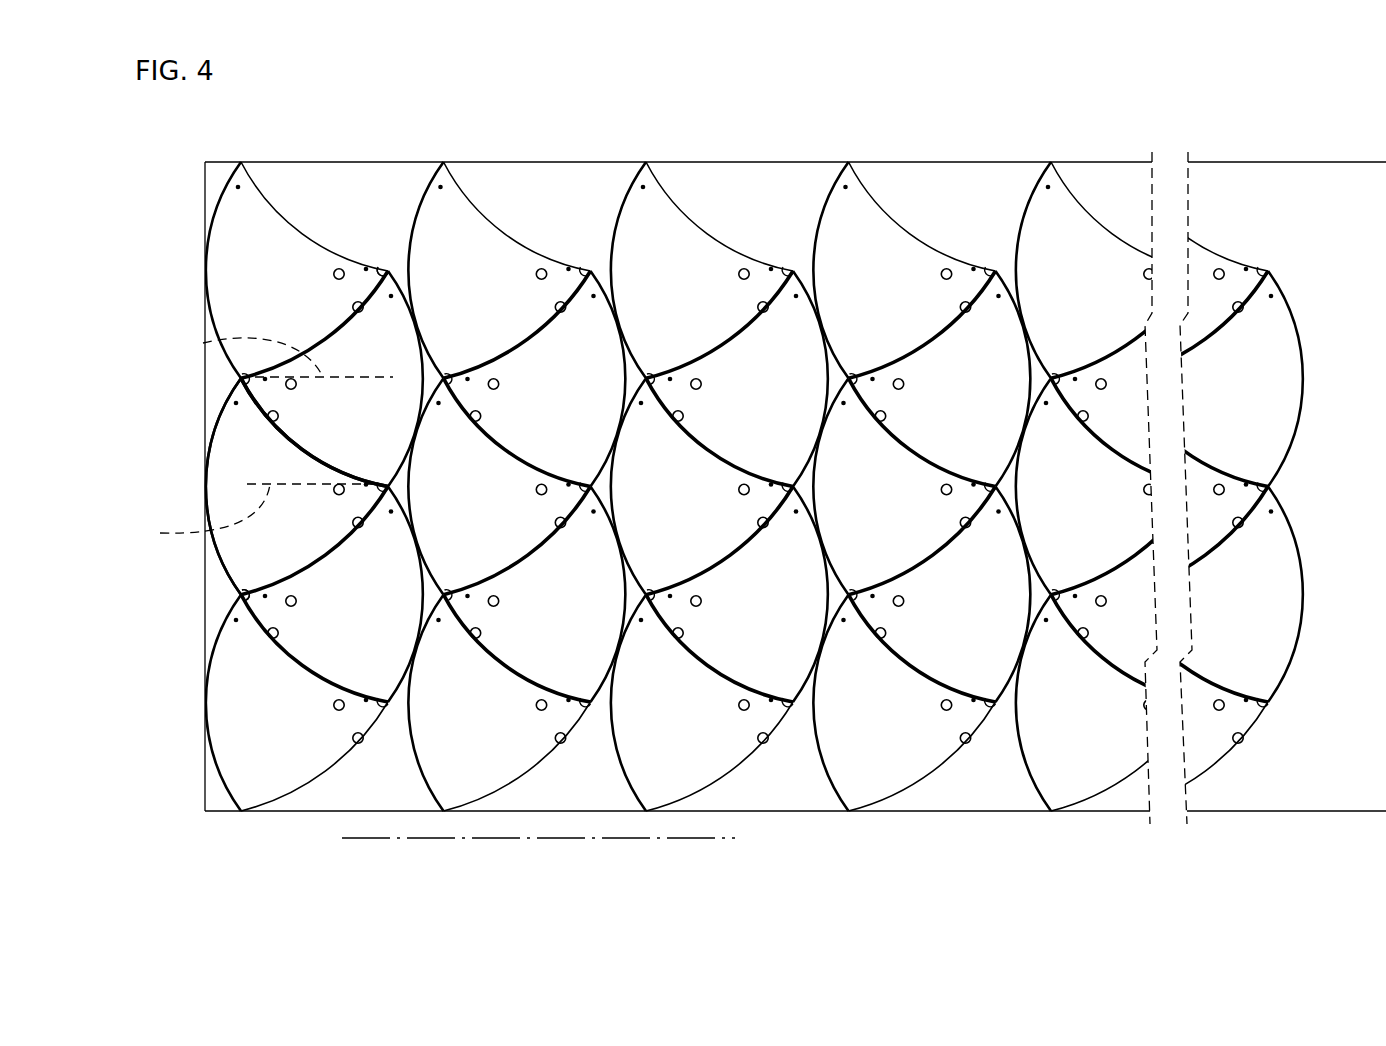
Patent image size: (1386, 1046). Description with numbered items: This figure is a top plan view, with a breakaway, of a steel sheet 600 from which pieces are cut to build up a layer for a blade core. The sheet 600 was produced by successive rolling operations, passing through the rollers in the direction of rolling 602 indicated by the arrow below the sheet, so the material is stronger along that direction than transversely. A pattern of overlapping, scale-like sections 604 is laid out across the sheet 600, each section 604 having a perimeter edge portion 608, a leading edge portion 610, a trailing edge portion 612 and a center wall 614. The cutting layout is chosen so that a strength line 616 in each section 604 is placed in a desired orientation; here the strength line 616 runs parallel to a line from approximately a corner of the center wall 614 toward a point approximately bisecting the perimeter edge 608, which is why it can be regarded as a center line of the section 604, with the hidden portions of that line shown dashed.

The steel sheet 600 is at (318, 138).
The direction of rolling 602 is at (688, 838).
The section 604 is at (233, 235).
The perimeter edge portion 608 is at (205, 492).
The leading edge portion 610 is at (240, 591).
The trailing edge portion 612 is at (257, 418).
The center wall 614 is at (383, 271).
The strength line 616 is at (160, 533).